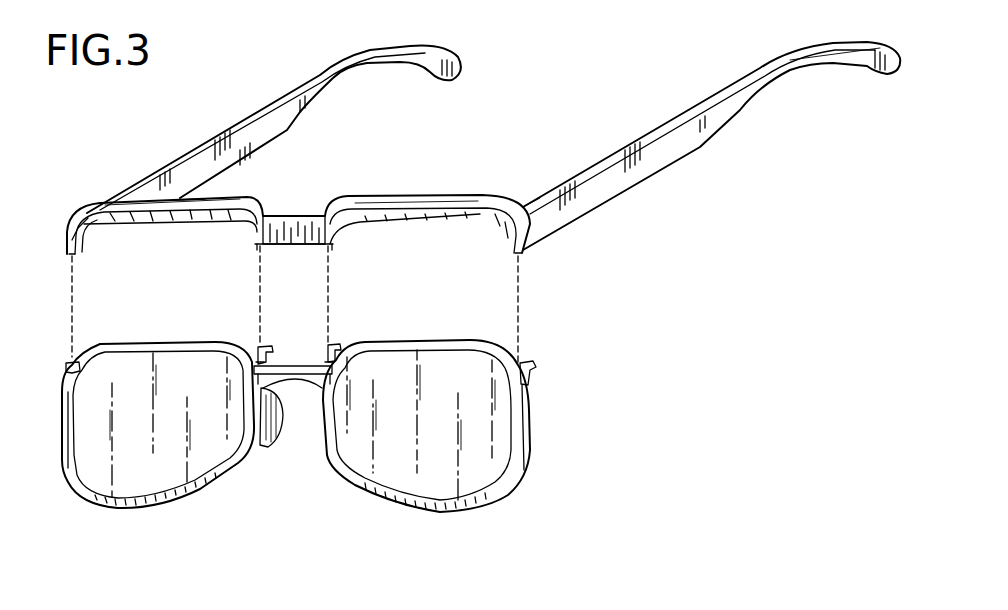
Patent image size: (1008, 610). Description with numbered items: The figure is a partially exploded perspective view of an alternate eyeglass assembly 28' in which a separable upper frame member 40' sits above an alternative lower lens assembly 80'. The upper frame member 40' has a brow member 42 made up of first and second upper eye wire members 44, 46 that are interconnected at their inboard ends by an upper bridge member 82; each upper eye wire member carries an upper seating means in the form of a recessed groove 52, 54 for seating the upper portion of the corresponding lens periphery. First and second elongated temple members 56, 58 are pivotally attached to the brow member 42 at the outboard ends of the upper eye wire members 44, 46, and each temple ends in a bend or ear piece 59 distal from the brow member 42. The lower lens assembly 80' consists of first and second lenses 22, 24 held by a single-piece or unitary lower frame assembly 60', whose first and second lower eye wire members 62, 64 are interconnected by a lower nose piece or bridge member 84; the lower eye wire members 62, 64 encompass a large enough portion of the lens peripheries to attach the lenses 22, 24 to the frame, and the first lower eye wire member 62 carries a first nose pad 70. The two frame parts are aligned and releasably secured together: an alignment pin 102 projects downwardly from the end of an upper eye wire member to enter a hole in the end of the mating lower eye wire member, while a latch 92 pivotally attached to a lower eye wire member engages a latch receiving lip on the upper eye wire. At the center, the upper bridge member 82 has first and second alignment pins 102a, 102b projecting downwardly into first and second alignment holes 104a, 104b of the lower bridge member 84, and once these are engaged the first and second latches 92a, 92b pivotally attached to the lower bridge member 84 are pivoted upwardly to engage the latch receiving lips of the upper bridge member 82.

The alternate eyeglass assembly 28' is at (297, 182).
The brow member 42 is at (253, 197).
The first upper eye wire member 44 is at (203, 197).
The second upper eye wire member 46 is at (437, 202).
The upper bridge member 82 is at (293, 225).
The recessed groove 52 is at (90, 227).
The recessed groove 54 is at (352, 228).
The first temple member 56 is at (233, 147).
The second temple member 58 is at (643, 165).
The ear piece 59 is at (770, 70).
The upper frame member 40' is at (635, 193).
The alignment pin 102 is at (76, 259).
The first alignment pin 102a is at (258, 258).
The second alignment pin 102b is at (332, 256).
The lower lens assembly 80' is at (636, 381).
The unitary lower frame assembly 60' is at (334, 426).
The first lens 22 is at (97, 453).
The second lens 24 is at (478, 429).
The first lower eye wire member 62 is at (128, 509).
The second lower eye wire member 64 is at (443, 503).
The lower bridge member 84 is at (298, 384).
The first nose pad 70 is at (263, 447).
The latch 92 is at (70, 365).
The first latch 92a is at (273, 354).
The second latch 92b is at (340, 350).
The first alignment hole 104a is at (259, 361).
The second alignment hole 104b is at (328, 360).